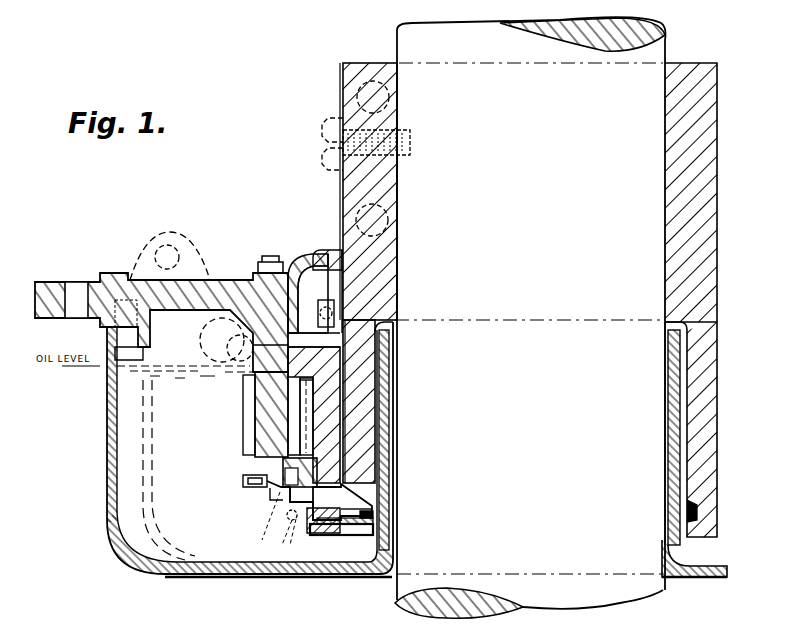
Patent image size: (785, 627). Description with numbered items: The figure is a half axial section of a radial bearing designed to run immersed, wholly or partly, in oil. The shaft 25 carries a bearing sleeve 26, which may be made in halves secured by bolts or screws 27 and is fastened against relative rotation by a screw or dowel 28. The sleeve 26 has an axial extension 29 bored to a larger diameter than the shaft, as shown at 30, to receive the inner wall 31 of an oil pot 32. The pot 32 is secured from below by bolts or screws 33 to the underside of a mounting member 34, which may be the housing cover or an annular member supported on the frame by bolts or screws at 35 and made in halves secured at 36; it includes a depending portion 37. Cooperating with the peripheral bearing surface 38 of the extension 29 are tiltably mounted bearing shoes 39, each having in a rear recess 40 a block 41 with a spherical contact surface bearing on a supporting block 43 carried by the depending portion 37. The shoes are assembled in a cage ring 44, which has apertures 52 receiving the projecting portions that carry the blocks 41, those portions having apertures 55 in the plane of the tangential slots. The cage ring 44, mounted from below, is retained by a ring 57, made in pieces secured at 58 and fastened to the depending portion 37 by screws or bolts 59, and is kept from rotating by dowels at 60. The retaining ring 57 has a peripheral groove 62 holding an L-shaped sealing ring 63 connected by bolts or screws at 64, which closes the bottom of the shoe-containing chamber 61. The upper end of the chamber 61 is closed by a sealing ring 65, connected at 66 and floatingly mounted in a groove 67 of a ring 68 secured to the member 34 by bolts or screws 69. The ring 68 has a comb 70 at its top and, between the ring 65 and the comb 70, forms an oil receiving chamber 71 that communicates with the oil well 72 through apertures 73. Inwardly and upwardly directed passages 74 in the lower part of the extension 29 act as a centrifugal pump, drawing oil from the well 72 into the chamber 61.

The shaft 25 is at (566, 562).
The bearing sleeve 26 is at (380, 300).
The bolts or screws 27 is at (395, 100).
The screw or dowel 28 is at (412, 143).
The axial extension 29 is at (350, 418).
The bore 30 is at (392, 360).
The inner wall 31 is at (388, 465).
The oil pot 32 is at (210, 577).
The bolts or screws 33 is at (110, 365).
The mounting member 34 is at (185, 295).
The bolts or screws 35 is at (76, 290).
The bolts or screws 36 is at (168, 258).
The depending portion 37 is at (273, 393).
The peripheral bearing surface 38 is at (318, 455).
The bearing shoes 39 is at (393, 330).
The recess 40 is at (258, 478).
The block 41 is at (303, 407).
The supporting block 43 is at (253, 457).
The cage ring 44 is at (295, 480).
The apertures 52 is at (303, 470).
The apertures 55 is at (300, 380).
The retaining ring 57 is at (340, 535).
The bolts or screws 58 is at (286, 534).
The screws or bolts 59 is at (283, 470).
The dowels 60 is at (268, 535).
The chamber 61 is at (330, 493).
The peripheral groove or recess 62 is at (320, 533).
The sealing ring 63 is at (373, 522).
The bolts or screws 64 is at (372, 504).
The sealing ring 65 is at (343, 318).
The bolts or screws 66 is at (334, 312).
The groove 67 is at (320, 317).
The ring 68 is at (293, 262).
The bolts or screws 69 is at (268, 260).
The comb 70 is at (339, 252).
The oil receiving chamber 71 is at (330, 258).
The oil well 72 is at (157, 428).
The apertures 73 is at (217, 323).
The apertures or passages 74 is at (690, 517).